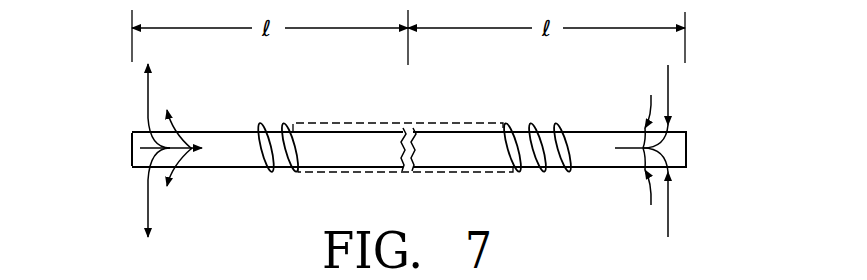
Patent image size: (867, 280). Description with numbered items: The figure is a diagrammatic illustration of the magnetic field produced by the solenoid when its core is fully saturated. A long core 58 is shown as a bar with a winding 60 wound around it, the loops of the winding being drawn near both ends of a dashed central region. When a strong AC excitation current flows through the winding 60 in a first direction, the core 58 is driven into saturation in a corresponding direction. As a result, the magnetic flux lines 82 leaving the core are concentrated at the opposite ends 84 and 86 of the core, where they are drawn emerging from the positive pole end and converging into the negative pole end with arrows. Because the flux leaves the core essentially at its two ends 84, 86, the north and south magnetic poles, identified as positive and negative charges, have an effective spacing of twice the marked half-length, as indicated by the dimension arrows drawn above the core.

The core 58 is at (235, 155).
The winding 60 is at (260, 124).
The magnetic flux lines 82 is at (137, 106).
The end of the core 84 is at (132, 167).
The end of the core 86 is at (673, 137).